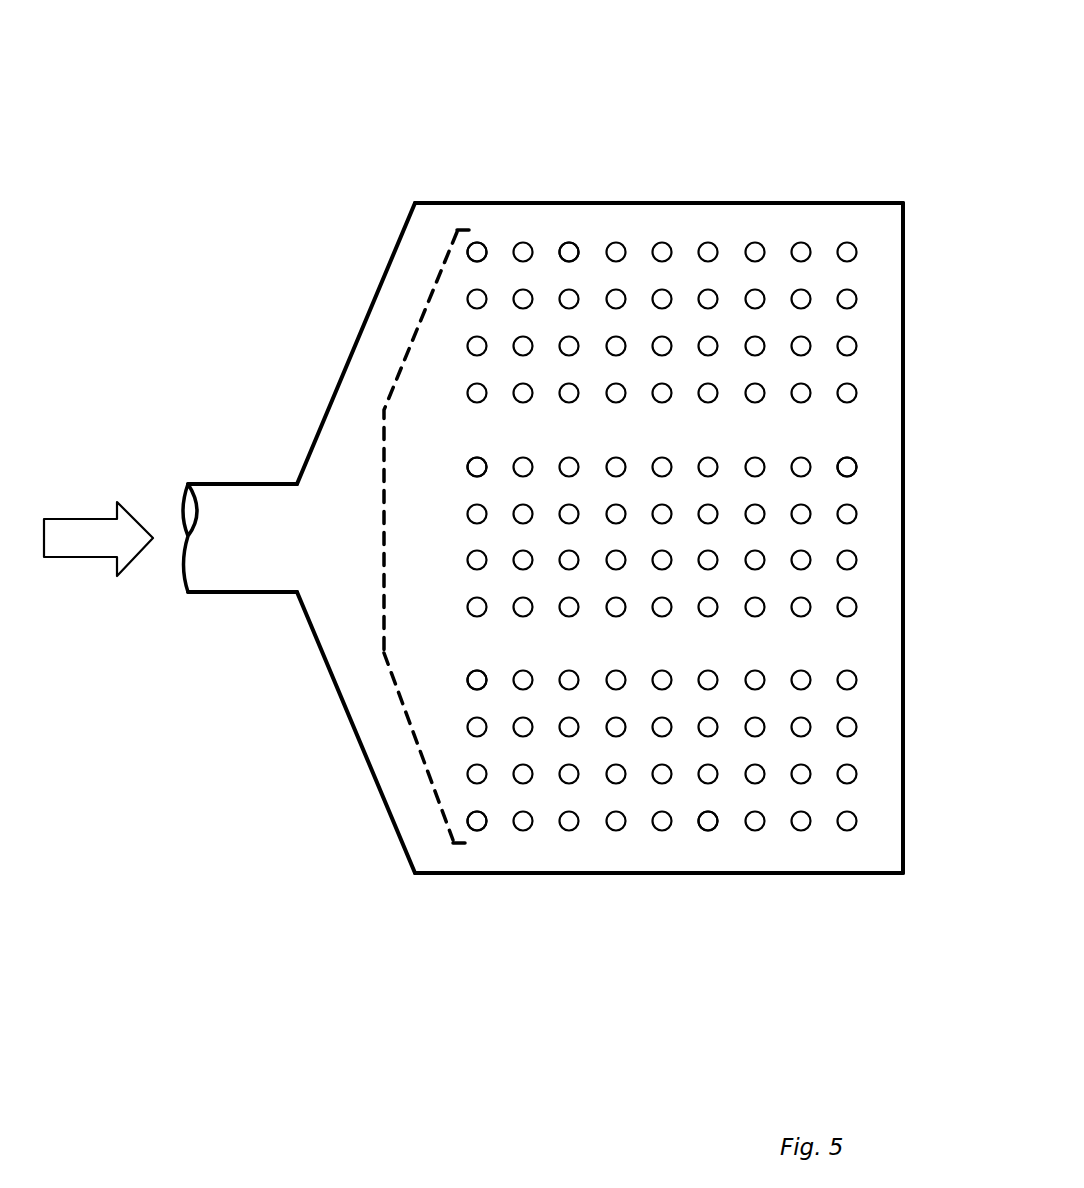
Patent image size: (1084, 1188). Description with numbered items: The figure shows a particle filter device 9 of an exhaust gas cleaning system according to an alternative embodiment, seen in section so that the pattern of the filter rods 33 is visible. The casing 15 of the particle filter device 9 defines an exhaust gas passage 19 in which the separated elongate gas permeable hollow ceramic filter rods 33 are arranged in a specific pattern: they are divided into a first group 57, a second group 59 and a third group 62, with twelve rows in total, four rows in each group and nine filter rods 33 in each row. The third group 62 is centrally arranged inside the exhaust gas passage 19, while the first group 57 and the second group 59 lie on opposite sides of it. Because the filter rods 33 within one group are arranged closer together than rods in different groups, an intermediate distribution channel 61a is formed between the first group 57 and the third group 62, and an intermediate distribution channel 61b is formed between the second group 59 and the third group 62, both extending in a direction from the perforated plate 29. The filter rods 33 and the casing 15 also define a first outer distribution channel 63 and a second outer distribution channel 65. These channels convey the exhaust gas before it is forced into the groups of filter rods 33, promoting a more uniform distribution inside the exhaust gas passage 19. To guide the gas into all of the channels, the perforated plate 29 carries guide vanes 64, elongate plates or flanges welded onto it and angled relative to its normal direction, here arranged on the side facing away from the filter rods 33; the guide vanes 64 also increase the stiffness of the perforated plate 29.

The particle filter device 9 is at (804, 131).
The casing 15 is at (807, 875).
The exhaust gas passage 19 is at (587, 842).
The perforated plate 29 is at (413, 728).
The filter rods 33 is at (568, 243).
The first group of filter rods 57 is at (500, 793).
The second group of filter rods 59 is at (500, 272).
The intermediate distribution channel 61a is at (475, 653).
The intermediate distribution channel 61b is at (832, 432).
The third group of filter rods 62 is at (502, 483).
The first outer distribution channel 63 is at (690, 842).
The guide vanes 64 is at (385, 440).
The second outer distribution channel 65 is at (655, 223).